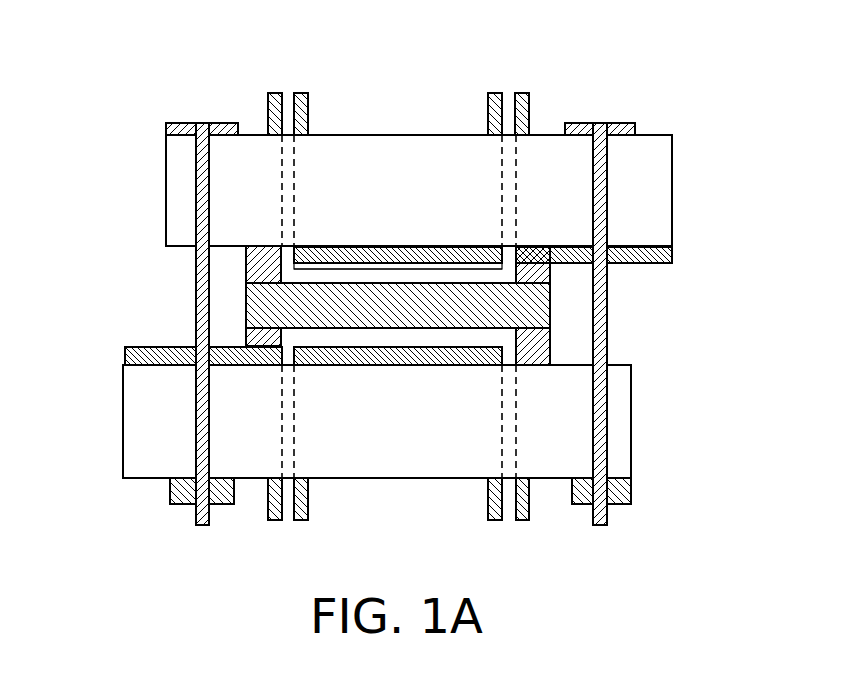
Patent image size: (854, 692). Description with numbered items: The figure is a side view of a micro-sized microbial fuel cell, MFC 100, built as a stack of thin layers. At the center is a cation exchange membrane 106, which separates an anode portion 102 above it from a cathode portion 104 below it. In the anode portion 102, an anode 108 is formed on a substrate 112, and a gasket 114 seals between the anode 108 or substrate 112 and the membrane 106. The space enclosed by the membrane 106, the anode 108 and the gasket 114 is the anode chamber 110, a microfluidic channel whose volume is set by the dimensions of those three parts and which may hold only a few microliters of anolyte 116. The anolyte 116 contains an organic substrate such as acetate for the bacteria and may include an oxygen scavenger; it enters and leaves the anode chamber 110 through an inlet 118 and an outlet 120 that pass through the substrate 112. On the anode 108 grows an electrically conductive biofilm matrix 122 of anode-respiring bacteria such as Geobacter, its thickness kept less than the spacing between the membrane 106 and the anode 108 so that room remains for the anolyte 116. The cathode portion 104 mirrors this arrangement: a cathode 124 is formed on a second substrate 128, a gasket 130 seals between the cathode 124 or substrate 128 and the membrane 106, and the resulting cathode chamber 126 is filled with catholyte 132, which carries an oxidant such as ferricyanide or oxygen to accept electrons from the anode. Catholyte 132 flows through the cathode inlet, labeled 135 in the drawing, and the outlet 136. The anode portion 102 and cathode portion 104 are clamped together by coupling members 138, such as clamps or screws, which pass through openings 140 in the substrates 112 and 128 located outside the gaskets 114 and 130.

The micro-sized MFC 100 is at (116, 89).
The anode portion 102 is at (714, 158).
The cathode portion 104 is at (655, 457).
The cation exchange membrane 106 is at (533, 313).
The anode 108 is at (483, 250).
The anode chamber 110 is at (293, 272).
The substrate 112 is at (430, 197).
The gasket 114 is at (250, 260).
The anolyte 116 is at (395, 277).
The inlet 118 is at (275, 93).
The outlet 120 is at (495, 92).
The biofilm matrix 122 is at (327, 270).
The cathode 124 is at (437, 353).
The cathode chamber 126 is at (473, 347).
The substrate 128 is at (412, 443).
The gasket 130 is at (307, 338).
The catholyte 132 is at (281, 338).
The third pins 135 is at (275, 522).
The outlet 136 is at (520, 522).
The coupling members 138 is at (618, 123).
The openings 140 is at (600, 467).